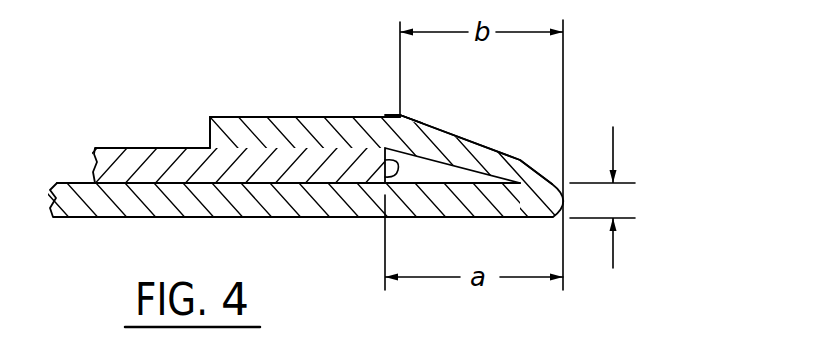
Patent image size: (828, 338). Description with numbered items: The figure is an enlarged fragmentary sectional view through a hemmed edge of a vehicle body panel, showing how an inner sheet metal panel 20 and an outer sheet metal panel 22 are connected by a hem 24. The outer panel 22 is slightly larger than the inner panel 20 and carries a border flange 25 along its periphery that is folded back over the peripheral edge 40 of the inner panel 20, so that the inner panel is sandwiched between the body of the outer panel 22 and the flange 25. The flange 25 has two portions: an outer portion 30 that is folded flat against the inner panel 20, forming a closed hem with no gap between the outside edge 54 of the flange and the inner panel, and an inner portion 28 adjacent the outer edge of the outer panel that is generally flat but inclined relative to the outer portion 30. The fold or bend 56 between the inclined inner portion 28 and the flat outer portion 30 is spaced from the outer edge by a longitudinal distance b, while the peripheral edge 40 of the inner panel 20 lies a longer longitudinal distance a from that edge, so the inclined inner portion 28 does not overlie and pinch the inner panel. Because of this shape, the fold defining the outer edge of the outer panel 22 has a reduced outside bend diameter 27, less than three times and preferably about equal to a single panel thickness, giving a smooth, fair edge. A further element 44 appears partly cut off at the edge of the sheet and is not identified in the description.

The inner sheet metal panel 20 is at (127, 153).
The outer sheet metal panel 22 is at (112, 208).
The hem 24 is at (600, 81).
The border flange 25 is at (245, 110).
The outside bend diameter 27 is at (602, 197).
The inner portion of the flange 28 is at (463, 134).
The outer portion of the flange 30 is at (303, 116).
The peripheral edge of the inner panel 40 is at (385, 176).
The element 44 is at (634, 327).
The outside edge of the flange 54 is at (208, 132).
The fold or bend 56 is at (401, 115).